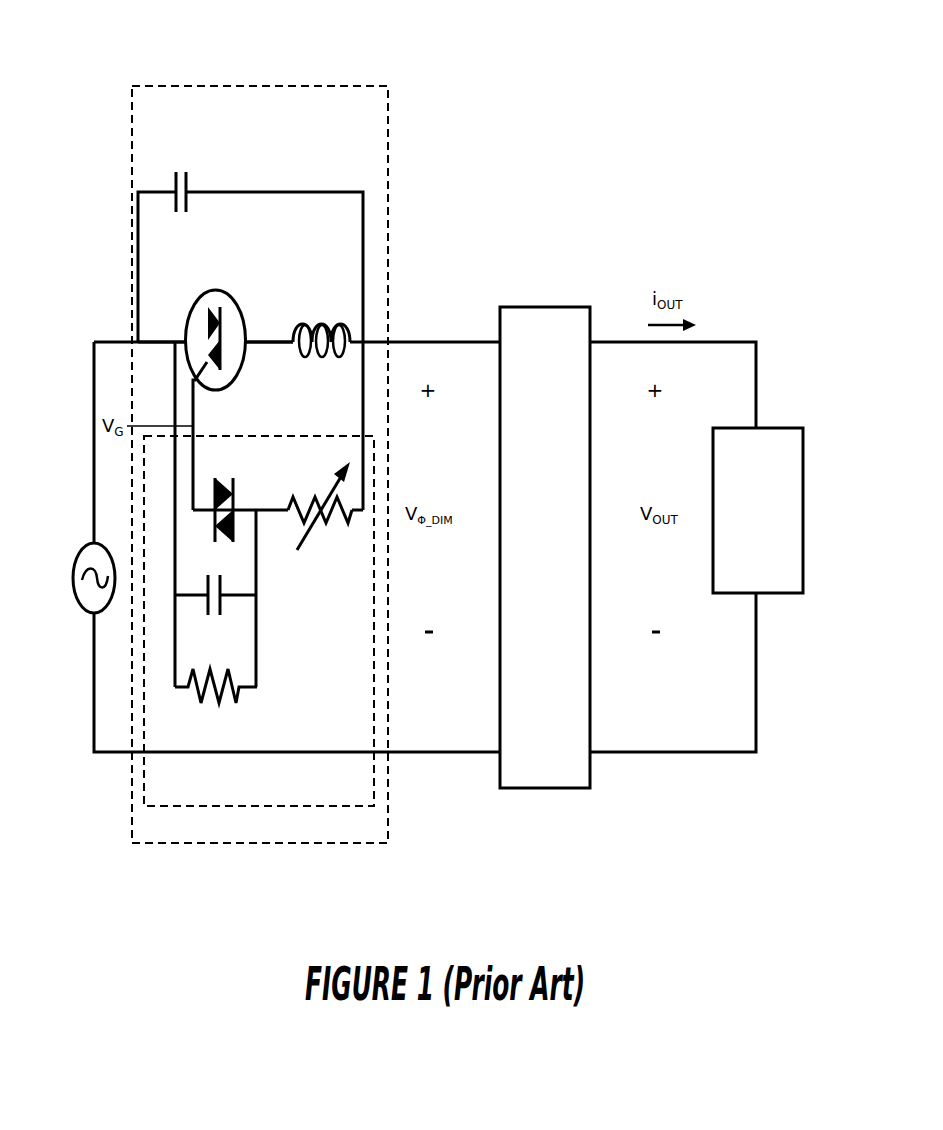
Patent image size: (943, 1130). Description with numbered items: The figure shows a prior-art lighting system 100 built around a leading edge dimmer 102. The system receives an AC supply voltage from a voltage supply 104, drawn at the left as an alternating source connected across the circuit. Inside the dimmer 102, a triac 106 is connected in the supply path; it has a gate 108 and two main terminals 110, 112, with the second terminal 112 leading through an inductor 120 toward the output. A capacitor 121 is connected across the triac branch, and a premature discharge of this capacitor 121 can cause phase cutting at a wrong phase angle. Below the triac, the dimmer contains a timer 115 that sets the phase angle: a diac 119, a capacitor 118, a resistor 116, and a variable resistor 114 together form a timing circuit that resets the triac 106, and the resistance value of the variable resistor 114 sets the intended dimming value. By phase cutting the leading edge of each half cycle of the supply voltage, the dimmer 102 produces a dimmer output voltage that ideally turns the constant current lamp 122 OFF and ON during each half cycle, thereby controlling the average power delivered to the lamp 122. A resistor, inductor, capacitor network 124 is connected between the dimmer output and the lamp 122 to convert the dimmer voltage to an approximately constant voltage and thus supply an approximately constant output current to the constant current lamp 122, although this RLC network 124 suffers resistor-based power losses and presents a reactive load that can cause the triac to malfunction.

The lighting system 100 is at (606, 190).
The leading edge dimmer 102 is at (310, 84).
The voltage supply 104 is at (78, 592).
The triac 106 is at (240, 297).
The gate terminal 108 is at (203, 393).
The first terminal 110 is at (183, 340).
The second terminal 112 is at (247, 345).
The variable resistor 114 is at (340, 527).
The timer 115 is at (303, 806).
The resistor 116 is at (220, 705).
The capacitor 118 is at (222, 590).
The diode for alternating current (diac) 119 is at (237, 493).
The inductor 120 is at (320, 358).
The capacitor 121 is at (186, 170).
The constant current lamp 122 is at (758, 510).
The resistor, inductor, capacitor (RLC) network 124 is at (545, 547).